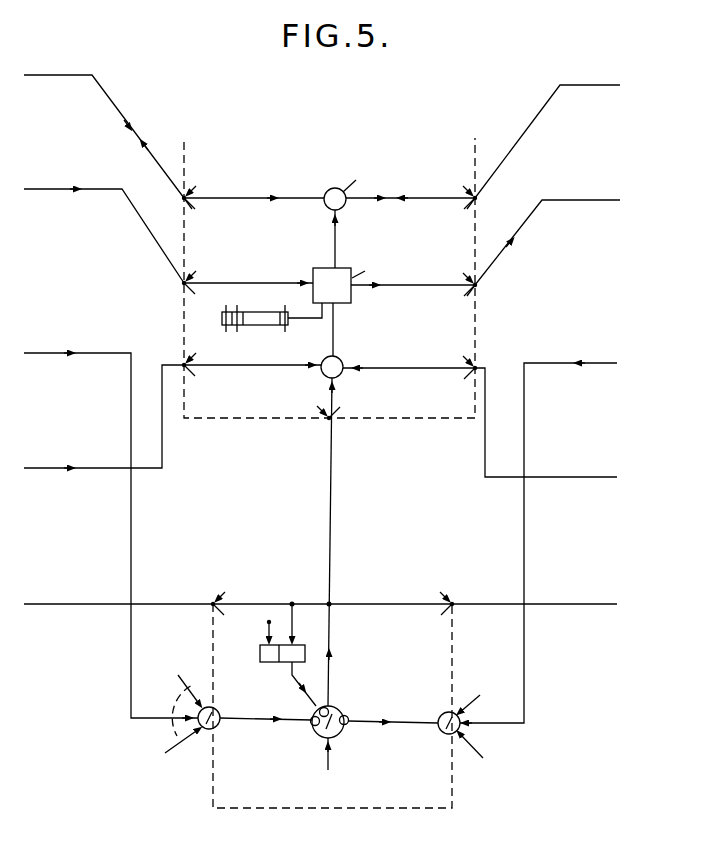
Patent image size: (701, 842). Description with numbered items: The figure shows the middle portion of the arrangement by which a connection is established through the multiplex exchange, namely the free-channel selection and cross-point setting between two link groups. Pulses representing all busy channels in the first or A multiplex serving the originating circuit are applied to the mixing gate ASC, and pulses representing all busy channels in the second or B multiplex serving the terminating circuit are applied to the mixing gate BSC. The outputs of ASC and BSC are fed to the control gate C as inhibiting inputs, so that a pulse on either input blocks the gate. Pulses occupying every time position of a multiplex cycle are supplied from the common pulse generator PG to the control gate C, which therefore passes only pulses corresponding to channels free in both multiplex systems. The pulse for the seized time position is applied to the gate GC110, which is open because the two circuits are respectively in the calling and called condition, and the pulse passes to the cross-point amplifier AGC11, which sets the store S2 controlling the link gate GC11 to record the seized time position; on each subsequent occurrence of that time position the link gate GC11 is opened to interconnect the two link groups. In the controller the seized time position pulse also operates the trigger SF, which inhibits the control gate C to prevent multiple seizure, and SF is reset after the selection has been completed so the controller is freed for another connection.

The link gate GC11 is at (329, 179).
The cross-point amplifier AGC11 is at (329, 296).
The store S2 is at (222, 320).
The gate GC110 is at (323, 377).
The trigger SF is at (267, 654).
The control gate C is at (339, 712).
The common pulse generator PG is at (316, 789).
The mixing gate ASC is at (195, 721).
The mixing gate BSC is at (463, 727).